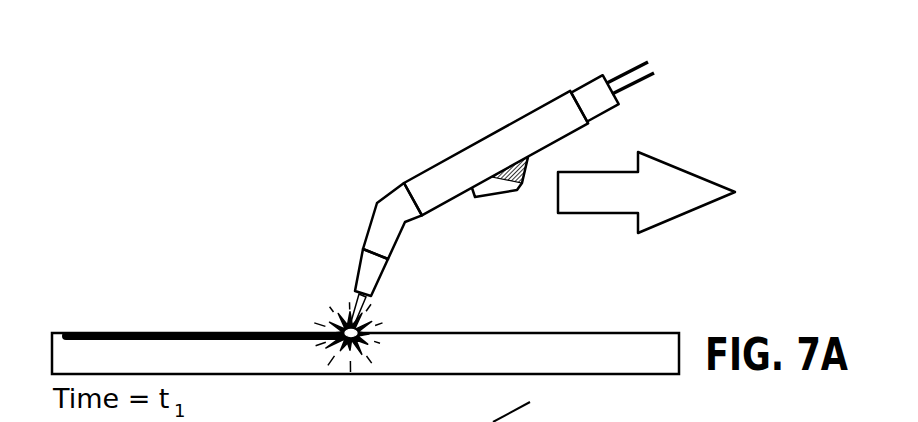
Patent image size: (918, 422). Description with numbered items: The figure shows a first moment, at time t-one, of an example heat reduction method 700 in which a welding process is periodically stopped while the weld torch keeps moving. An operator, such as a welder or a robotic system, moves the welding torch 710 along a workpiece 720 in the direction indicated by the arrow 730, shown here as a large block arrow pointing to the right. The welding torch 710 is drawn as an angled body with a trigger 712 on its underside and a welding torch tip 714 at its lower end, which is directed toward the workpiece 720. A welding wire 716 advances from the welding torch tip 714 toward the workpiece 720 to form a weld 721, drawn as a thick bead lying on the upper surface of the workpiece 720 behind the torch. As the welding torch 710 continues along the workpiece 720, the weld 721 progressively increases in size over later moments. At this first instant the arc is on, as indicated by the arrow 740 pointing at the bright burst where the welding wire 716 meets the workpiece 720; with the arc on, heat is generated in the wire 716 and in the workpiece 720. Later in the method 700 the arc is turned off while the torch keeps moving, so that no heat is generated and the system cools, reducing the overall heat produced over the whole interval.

The heat reduction method 700 is at (157, 80).
The welding torch 710 is at (503, 128).
The trigger 712 is at (492, 195).
The welding torch tip 714 is at (357, 267).
The welding wire 716 is at (372, 303).
The workpiece 720 is at (563, 333).
The weld 721 is at (107, 330).
The arrow 730 is at (678, 168).
The arrow 740 is at (322, 296).